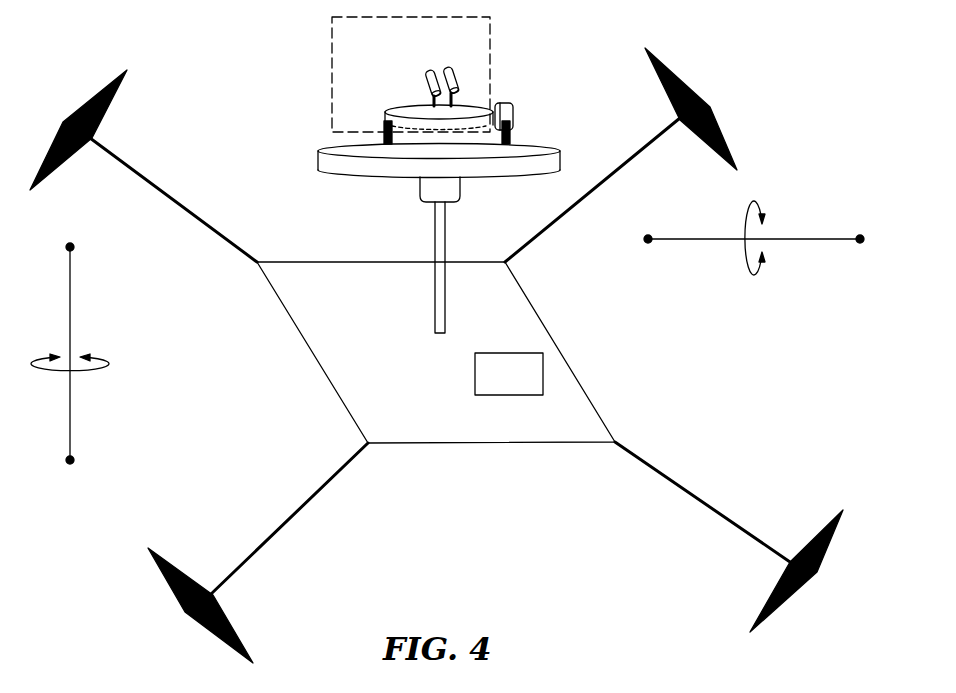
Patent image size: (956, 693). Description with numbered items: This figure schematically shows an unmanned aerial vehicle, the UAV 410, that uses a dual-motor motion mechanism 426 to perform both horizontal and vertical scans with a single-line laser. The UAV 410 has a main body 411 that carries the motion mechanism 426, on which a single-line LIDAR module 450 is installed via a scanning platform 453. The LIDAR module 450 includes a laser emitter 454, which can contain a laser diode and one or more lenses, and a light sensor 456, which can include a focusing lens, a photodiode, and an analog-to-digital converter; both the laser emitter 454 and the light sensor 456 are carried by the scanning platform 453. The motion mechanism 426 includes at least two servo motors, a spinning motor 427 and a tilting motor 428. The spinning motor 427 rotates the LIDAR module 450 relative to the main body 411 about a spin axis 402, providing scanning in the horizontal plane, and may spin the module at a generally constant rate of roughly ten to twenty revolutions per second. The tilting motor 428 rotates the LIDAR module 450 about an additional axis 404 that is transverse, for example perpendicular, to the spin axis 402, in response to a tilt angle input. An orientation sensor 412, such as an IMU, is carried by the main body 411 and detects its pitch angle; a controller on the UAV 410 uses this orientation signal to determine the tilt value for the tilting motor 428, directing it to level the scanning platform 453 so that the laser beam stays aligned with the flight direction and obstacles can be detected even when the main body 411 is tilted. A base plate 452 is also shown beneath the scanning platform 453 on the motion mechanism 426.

The spin axis 402 is at (72, 297).
The additional axis 404 is at (838, 240).
The UAV 410 is at (436, 355).
The main body 411 is at (242, 406).
The orientation sensor 412 is at (509, 374).
The motion mechanism 426 is at (423, 175).
The spinning motor 427 is at (447, 186).
The tilting motor 428 is at (513, 112).
The LIDAR module 450 is at (405, 80).
The base plate 452 is at (344, 170).
The scanning platform 453 is at (385, 122).
The laser emitter 454 is at (446, 66).
The light sensor 456 is at (428, 85).